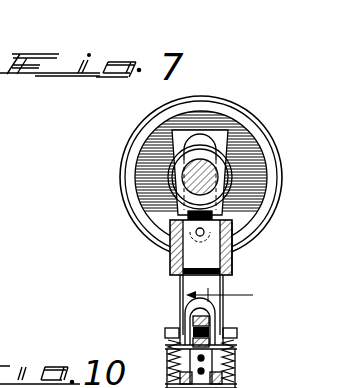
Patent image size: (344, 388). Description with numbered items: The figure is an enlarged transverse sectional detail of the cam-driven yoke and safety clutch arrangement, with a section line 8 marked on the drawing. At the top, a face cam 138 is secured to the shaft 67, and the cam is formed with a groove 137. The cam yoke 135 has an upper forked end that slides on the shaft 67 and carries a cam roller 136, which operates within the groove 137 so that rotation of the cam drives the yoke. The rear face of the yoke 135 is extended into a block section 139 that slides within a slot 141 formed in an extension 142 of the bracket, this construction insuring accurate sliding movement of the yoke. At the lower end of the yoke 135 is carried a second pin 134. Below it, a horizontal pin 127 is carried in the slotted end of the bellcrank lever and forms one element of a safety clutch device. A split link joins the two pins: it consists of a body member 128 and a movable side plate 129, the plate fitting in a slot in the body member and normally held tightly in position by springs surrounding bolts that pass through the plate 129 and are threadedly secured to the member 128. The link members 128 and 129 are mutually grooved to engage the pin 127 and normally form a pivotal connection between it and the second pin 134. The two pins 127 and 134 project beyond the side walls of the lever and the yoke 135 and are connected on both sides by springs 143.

The section line 8- 8 is at (228, 288).
The shaft 67 is at (242, 163).
The horizontal pin 127 is at (236, 378).
The body member 128 is at (182, 322).
The movable side plate 129 is at (214, 366).
The second pin 134 is at (236, 338).
The cam yoke 135 is at (152, 203).
The cam roller 136 is at (258, 212).
The groove 137 is at (152, 140).
The face cam 138 is at (143, 127).
The block section 139 is at (182, 259).
The slot 141 is at (162, 241).
The extension 142 is at (230, 272).
The springs 143 is at (167, 347).